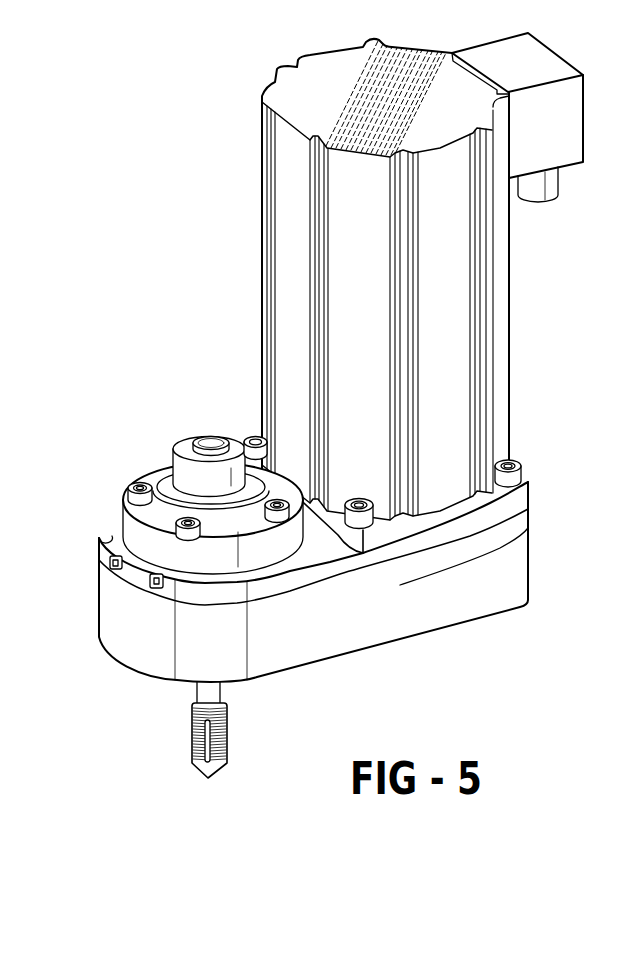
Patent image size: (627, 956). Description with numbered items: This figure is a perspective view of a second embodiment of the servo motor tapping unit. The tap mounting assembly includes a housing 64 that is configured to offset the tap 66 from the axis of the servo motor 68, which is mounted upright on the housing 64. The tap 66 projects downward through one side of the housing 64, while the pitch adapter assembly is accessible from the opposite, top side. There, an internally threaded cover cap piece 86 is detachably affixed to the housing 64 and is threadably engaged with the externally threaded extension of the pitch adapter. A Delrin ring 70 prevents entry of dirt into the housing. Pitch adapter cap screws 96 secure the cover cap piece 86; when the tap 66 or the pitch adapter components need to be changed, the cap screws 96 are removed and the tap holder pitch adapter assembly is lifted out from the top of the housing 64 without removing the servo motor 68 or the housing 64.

The housing 64 is at (513, 557).
The tap 66 is at (190, 735).
The servo motor 68 is at (262, 202).
The Delrin ring 70 is at (192, 433).
The cover cap piece 86 is at (132, 528).
The pitch adapter cap screws 96 is at (188, 520).